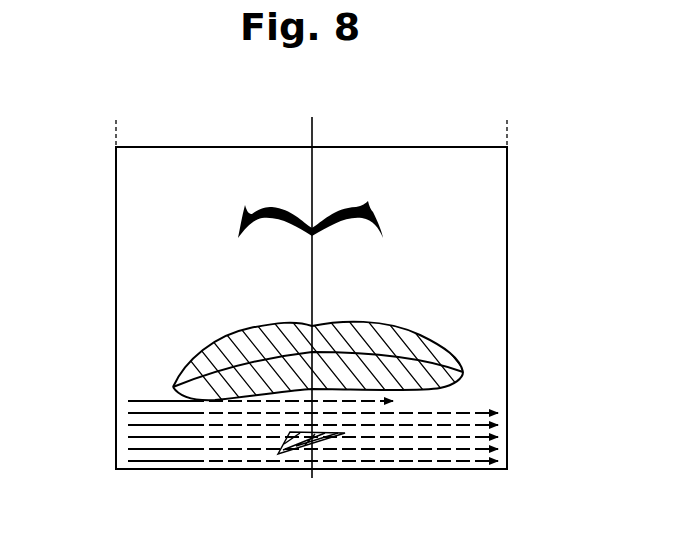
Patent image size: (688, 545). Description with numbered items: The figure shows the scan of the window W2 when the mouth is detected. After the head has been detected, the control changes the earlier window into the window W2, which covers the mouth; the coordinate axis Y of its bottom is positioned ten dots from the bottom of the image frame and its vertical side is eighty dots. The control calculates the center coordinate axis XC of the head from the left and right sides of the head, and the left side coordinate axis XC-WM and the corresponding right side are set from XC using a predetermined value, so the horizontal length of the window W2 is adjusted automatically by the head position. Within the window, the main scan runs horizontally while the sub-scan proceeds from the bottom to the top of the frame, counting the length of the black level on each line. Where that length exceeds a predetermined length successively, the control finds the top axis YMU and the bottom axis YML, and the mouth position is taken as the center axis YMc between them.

The window W2 is at (508, 281).
The center coordinate axis XC is at (312, 288).
The left side coordinate axis XC-WM is at (123, 122).
The top axis YMU is at (237, 334).
The center axis YMc is at (178, 362).
The bottom axis YML is at (173, 388).